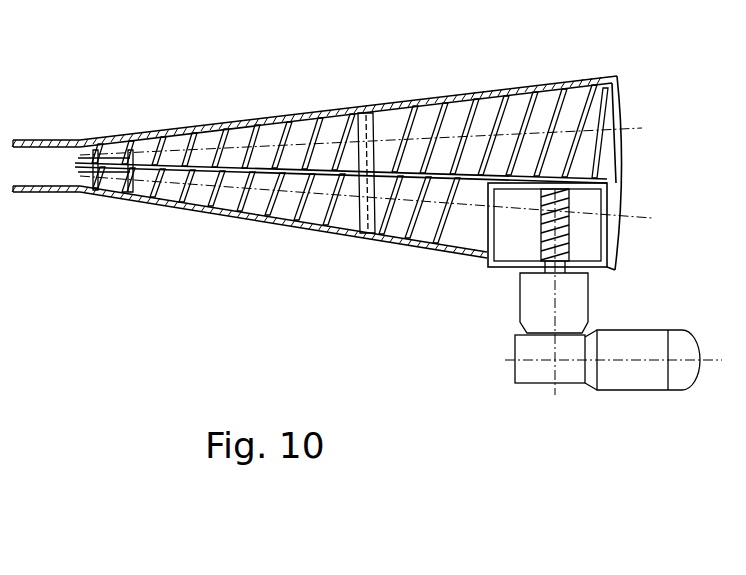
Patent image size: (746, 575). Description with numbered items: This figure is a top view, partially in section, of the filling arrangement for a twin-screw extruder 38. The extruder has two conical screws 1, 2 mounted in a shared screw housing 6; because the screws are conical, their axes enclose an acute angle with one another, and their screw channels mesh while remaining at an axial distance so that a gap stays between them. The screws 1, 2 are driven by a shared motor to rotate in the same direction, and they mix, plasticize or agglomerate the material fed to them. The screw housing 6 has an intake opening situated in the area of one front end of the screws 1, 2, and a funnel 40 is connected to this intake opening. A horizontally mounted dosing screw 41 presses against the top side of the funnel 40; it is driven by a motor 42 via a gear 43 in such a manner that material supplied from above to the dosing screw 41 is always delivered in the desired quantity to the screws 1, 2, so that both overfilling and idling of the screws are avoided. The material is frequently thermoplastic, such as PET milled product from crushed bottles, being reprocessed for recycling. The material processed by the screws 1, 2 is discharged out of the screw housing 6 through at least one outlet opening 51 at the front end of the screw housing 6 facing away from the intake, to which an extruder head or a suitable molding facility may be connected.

The conical screw 1 is at (295, 142).
The conical screw 2 is at (260, 197).
The screw housing 6 is at (484, 100).
The twin-screw extruder 38 is at (370, 246).
The funnel 40 is at (603, 240).
The dosing screw 41 is at (542, 248).
The motor 42 is at (632, 377).
The gear 43 is at (543, 367).
The outlet opening 51 is at (40, 165).